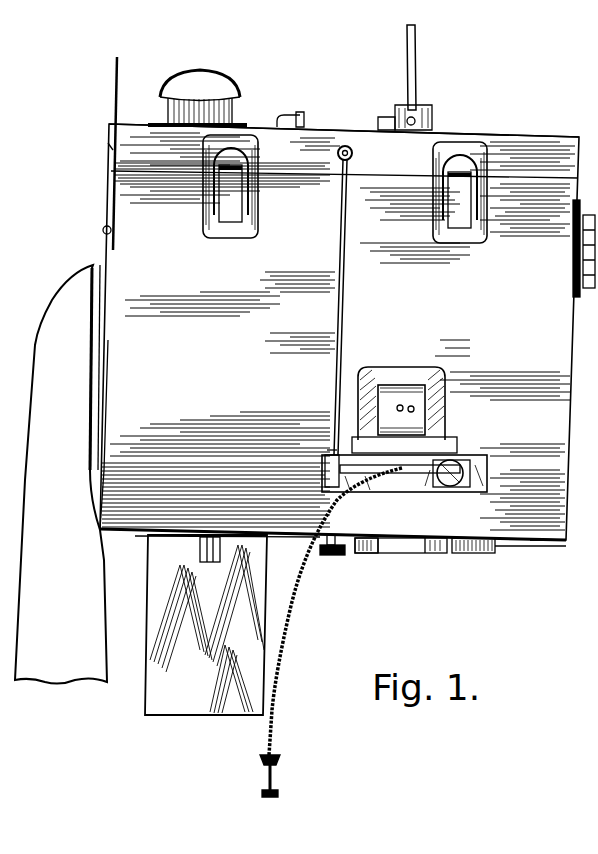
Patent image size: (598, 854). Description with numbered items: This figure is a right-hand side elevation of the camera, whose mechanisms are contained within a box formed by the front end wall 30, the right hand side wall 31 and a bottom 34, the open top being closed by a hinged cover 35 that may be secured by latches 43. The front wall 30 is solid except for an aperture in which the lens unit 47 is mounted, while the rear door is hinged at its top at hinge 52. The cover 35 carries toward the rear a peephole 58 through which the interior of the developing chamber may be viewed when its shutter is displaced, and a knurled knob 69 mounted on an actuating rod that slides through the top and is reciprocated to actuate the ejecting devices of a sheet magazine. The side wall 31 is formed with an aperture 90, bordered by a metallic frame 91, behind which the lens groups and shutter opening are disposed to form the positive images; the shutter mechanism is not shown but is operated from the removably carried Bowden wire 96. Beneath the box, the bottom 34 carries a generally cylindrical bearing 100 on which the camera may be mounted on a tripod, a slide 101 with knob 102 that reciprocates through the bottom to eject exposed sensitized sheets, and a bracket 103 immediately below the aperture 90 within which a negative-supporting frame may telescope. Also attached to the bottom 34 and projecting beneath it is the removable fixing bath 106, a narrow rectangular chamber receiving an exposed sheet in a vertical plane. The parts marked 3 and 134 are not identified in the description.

The curtain 3 is at (61, 427).
The front end wall 30 is at (568, 393).
The right hand side wall 31 is at (517, 533).
The bottom 34 is at (545, 545).
The hinged cover 35 is at (540, 133).
The latches 43 is at (228, 178).
The lens unit 47 is at (585, 300).
The hinge 52 is at (102, 230).
The peephole 58 is at (236, 104).
The knurled knob 69 is at (430, 110).
The aperture 90 is at (418, 385).
The metallic frame 91 is at (389, 370).
The Bowden wire 96 is at (289, 625).
The cylindrical bearing 100 is at (472, 555).
The slide 101 is at (345, 556).
The knob 102 is at (323, 556).
The bracket 103 is at (365, 548).
The fixing bath 106 is at (167, 572).
The rod 134 is at (338, 261).